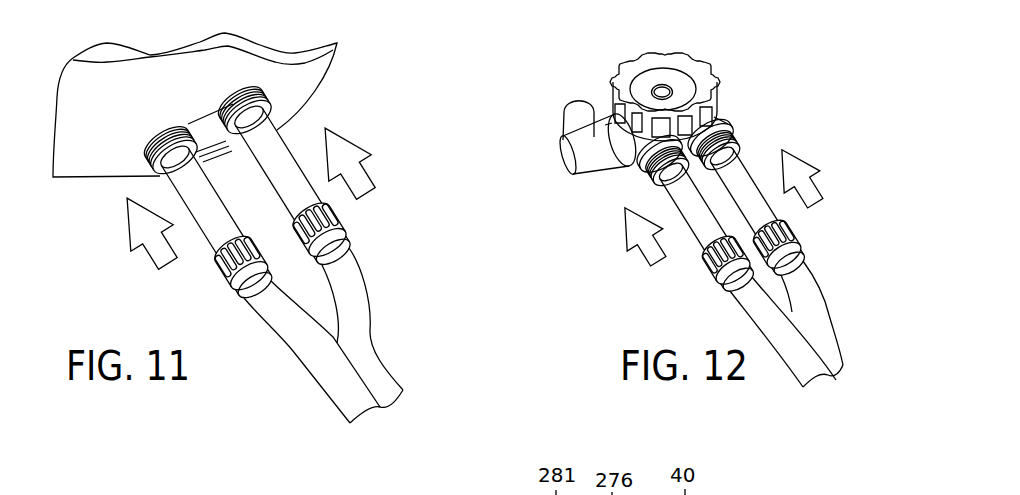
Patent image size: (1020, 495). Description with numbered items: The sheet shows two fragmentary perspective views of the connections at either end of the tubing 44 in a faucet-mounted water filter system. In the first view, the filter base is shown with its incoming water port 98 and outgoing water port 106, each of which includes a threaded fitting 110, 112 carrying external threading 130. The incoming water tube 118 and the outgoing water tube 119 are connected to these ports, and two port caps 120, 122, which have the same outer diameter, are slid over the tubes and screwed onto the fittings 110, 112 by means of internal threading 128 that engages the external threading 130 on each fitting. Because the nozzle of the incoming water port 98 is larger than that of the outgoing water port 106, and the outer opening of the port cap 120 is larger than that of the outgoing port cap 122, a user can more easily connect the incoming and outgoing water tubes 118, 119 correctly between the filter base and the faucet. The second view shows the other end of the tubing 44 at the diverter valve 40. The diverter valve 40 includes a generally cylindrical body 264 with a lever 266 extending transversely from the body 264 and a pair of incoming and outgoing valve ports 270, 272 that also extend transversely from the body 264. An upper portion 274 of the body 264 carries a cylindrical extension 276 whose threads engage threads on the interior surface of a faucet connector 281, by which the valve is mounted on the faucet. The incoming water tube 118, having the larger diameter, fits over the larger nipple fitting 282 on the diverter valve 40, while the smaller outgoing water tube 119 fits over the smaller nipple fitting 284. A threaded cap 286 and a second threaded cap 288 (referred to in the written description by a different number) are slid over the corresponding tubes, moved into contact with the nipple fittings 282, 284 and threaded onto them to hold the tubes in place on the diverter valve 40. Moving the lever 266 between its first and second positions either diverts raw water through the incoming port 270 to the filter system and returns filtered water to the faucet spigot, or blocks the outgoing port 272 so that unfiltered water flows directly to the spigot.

In FIG. 12, the diverter valve 40 is at (732, 75).
In FIG. 11, the tubing 44 is at (292, 381).
In FIG. 12, the tubing 44 is at (843, 325).
In FIG. 11, the incoming water port 98 is at (129, 158).
In FIG. 11, the outgoing water port 106 is at (285, 112).
In FIG. 11, the threaded fitting 110 is at (160, 131).
In FIG. 11, the threaded fitting 112 is at (244, 96).
In FIG. 11, the incoming water tube 118 is at (270, 303).
In FIG. 11, the outgoing water tube 119 is at (347, 279).
In FIG. 11, the port cap 120 is at (233, 270).
In FIG. 11, the port cap 122 is at (333, 232).
In FIG. 11, the internal threading 128 is at (258, 251).
In FIG. 11, the external threading 130 is at (178, 136).
In FIG. 12, the body 264 is at (717, 128).
In FIG. 12, the lever 266 is at (596, 150).
In FIG. 12, the incoming valve port 270 is at (616, 185).
In FIG. 12, the outgoing valve port 272 is at (748, 126).
In FIG. 12, the upper portion 274 is at (603, 84).
In FIG. 12, the cylindrical extension 276 is at (668, 80).
In FIG. 12, the faucet connector 281 is at (640, 72).
In FIG. 12, the nipple fitting 282 is at (652, 174).
In FIG. 12, the nipple fitting 284 is at (730, 144).
In FIG. 12, the threaded cap 286 is at (716, 264).
In FIG. 12, the second hose clamp 288 is at (786, 238).